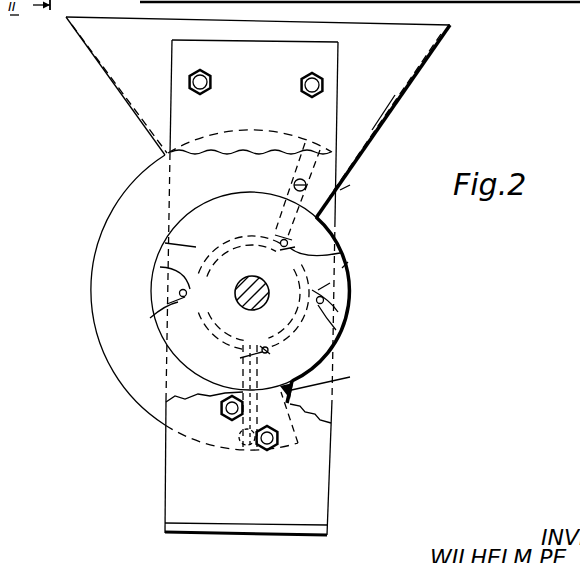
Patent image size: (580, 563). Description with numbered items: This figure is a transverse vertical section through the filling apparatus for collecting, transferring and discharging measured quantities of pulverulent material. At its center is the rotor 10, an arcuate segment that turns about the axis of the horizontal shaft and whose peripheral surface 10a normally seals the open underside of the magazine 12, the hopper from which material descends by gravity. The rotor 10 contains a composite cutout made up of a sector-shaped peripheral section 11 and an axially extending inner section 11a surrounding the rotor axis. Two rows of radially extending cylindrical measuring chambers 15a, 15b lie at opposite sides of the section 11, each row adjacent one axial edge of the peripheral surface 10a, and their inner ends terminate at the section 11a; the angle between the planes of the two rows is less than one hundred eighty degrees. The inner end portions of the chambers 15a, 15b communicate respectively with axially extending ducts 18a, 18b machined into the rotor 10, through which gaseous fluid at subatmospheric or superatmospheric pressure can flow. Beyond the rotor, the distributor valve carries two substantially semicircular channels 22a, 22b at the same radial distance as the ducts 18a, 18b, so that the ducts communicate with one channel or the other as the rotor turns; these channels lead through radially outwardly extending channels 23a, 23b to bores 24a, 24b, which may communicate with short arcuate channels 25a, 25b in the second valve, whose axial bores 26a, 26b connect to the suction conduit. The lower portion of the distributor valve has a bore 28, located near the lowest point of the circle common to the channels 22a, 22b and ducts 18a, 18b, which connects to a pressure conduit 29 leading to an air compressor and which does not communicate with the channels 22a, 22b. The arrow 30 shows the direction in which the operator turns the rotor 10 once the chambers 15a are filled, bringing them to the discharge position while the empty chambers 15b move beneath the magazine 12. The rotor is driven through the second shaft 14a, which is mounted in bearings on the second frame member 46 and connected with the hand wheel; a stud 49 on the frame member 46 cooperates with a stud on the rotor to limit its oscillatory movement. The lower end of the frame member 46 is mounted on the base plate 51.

The rotor 10 is at (355, 168).
The peripheral surface 10a is at (362, 148).
The sector-shaped peripheral section 11 is at (350, 186).
The axially extending inner section 11a is at (348, 265).
The magazine 12 is at (422, 60).
The second shaft 14a is at (238, 292).
The measuring chambers 15a is at (340, 205).
The measuring chambers 15b is at (253, 413).
The duct 18a is at (273, 233).
The duct 18b is at (240, 358).
The semicircular channel 22a is at (341, 253).
The semicircular channel 22b is at (165, 243).
The radially outwardly extending channel 23a is at (330, 284).
The radially outwardly extending channel 23b is at (160, 267).
The bore 24a is at (328, 295).
The bore 24b is at (179, 290).
The arcuate channel 25a is at (348, 333).
The arcuate channel 25b is at (150, 319).
The axial bore 26a is at (342, 312).
The axial bore 26b is at (167, 304).
The bore 28 is at (253, 292).
The pressure conduit 29 is at (258, 380).
The arrow 30 is at (359, 233).
The second frame member 46 is at (338, 56).
The stud 49 is at (222, 413).
The base plate 51 is at (257, 525).